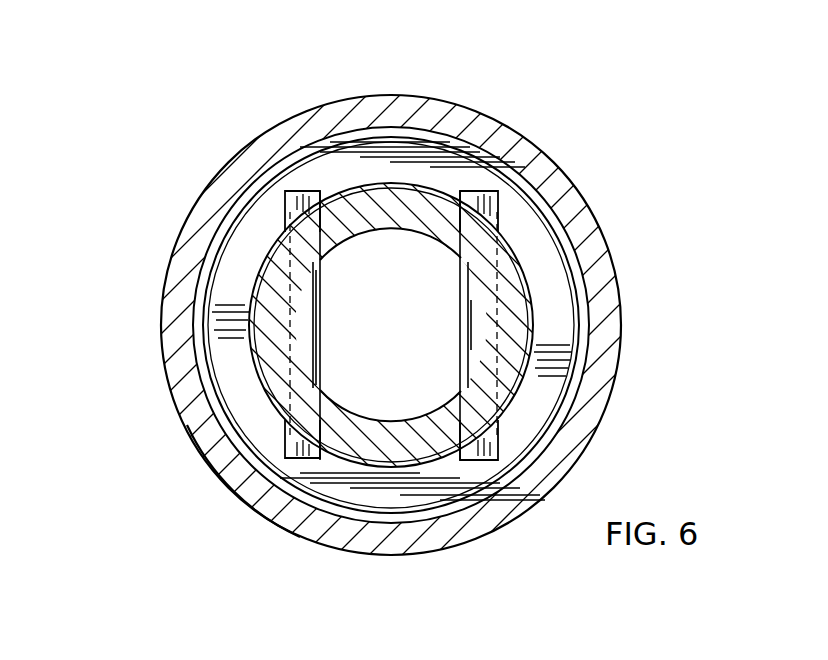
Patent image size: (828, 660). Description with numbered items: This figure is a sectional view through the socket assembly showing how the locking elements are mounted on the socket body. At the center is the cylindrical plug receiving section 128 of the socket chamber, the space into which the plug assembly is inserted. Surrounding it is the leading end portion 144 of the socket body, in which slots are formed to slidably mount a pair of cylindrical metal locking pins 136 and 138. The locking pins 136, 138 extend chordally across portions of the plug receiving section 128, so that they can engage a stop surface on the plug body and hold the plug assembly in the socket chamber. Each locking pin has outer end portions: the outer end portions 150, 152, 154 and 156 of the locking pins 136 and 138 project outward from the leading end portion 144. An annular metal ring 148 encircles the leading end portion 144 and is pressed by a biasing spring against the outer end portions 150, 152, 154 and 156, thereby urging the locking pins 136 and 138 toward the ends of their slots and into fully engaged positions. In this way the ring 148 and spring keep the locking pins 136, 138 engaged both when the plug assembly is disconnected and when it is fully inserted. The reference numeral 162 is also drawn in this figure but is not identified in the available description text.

The housing 162 is at (353, 86).
The leading end portion 144 is at (400, 198).
The plug receiving section 128 is at (396, 355).
The locking pin 138 is at (302, 332).
The outer end portion 156 is at (288, 193).
The outer end portion 150 is at (507, 168).
The locking pin 136 is at (508, 204).
The outer end portion 152 is at (487, 462).
The outer end portion 154 is at (238, 491).
The ring 148 is at (343, 490).